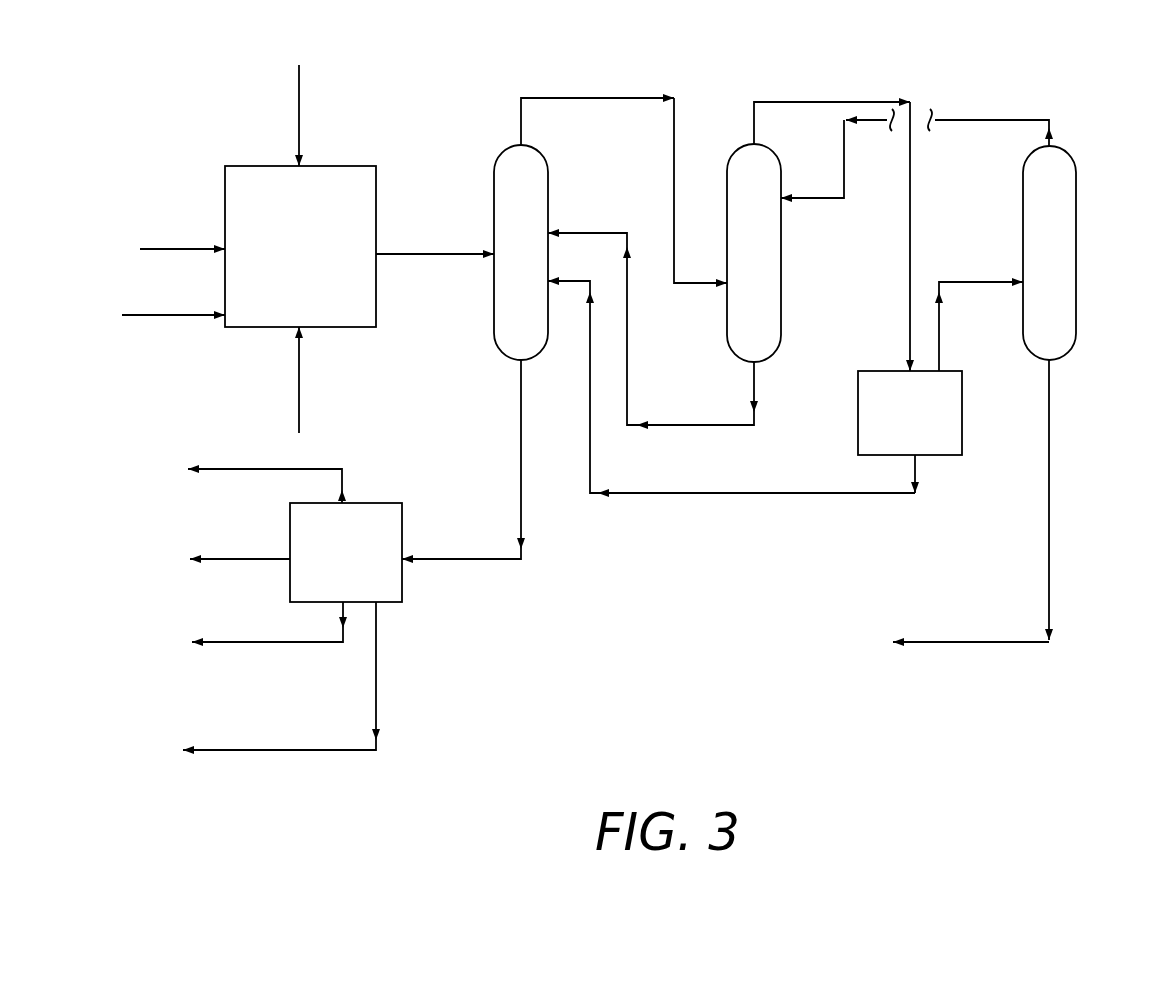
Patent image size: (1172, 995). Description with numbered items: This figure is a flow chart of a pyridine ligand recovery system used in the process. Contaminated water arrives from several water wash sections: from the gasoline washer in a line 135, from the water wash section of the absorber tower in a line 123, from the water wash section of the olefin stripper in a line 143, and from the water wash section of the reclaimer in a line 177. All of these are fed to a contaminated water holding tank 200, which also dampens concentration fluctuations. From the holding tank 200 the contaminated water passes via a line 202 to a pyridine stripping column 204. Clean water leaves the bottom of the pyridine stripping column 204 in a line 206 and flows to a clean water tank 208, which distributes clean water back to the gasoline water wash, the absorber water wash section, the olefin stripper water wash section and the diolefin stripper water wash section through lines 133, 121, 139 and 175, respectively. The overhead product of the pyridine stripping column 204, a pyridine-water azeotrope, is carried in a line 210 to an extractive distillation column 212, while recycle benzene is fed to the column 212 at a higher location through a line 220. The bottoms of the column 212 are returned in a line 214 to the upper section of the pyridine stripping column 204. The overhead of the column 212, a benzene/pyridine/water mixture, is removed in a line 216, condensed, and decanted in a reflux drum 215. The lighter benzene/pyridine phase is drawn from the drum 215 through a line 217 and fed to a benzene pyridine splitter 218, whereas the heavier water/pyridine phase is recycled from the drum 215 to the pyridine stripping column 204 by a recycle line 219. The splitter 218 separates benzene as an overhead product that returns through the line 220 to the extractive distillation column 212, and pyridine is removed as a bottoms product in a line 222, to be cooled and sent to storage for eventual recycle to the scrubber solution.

The contaminated water holding tank 200 is at (303, 261).
The clean water tank 208 is at (357, 570).
The reflux drum 215 is at (910, 413).
The pyridine stripping column 204 is at (494, 318).
The extractive distillation column 212 is at (781, 296).
The benzene pyridine splitter 218 is at (1076, 249).
The line 143 is at (299, 100).
The line 135 is at (160, 249).
The line 123 is at (147, 317).
The line 177 is at (299, 385).
The line 202 is at (452, 254).
The line 210 is at (575, 98).
The line 214 is at (700, 425).
The line 206 is at (522, 514).
The line 216 is at (802, 101).
The line 220 is at (1002, 120).
The line 217 is at (982, 282).
The recycle line 219 is at (712, 493).
The line 222 is at (1049, 534).
The line 133 is at (223, 468).
The line 121 is at (225, 558).
The line 175 is at (232, 642).
The line 139 is at (240, 750).